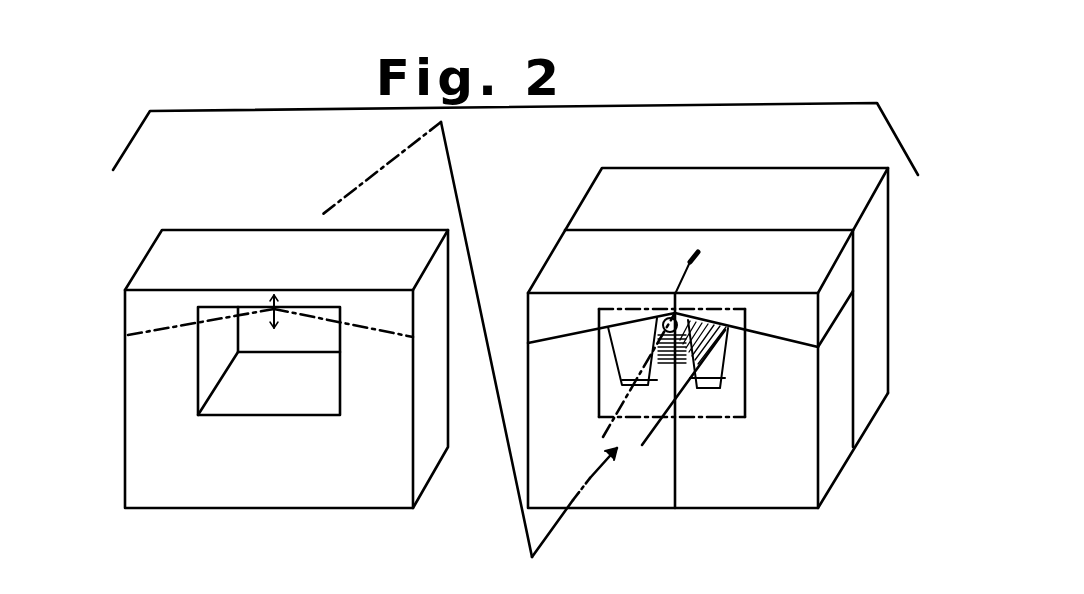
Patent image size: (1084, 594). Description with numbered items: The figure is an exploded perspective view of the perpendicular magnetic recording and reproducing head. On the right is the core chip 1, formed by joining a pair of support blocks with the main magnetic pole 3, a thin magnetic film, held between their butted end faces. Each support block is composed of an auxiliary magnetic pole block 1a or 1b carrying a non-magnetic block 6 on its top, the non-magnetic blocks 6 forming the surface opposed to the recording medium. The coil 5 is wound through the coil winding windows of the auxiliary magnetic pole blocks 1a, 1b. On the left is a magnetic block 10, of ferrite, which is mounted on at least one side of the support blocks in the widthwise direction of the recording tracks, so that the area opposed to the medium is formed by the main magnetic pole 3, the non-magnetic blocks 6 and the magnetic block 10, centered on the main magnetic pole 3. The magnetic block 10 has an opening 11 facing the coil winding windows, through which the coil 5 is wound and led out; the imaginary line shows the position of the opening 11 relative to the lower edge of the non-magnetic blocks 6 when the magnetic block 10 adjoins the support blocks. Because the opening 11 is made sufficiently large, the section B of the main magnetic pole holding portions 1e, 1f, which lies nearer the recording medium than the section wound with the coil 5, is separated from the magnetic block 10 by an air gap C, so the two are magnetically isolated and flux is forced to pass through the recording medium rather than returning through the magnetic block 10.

The core chip 1 is at (832, 462).
The auxiliary magnetic pole block 1a is at (742, 508).
The auxiliary magnetic pole block 1b is at (585, 510).
The main magnetic pole holding portion 1e is at (680, 378).
The main magnetic pole holding portion 1f is at (680, 378).
The main magnetic pole 3 is at (692, 258).
The coil 5 is at (658, 440).
The non-magnetic block 6 is at (147, 330).
The magnetic block 10 is at (427, 458).
The opening 11 is at (287, 403).
The section B is at (682, 310).
The air gap C is at (274, 309).